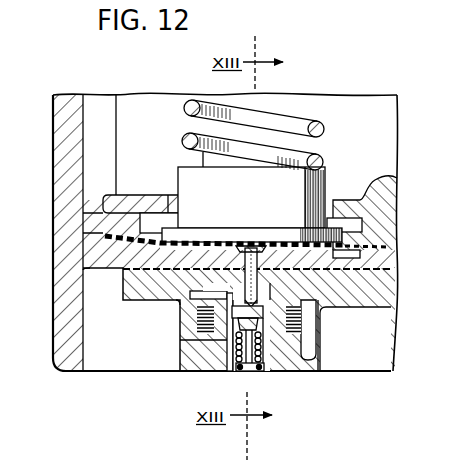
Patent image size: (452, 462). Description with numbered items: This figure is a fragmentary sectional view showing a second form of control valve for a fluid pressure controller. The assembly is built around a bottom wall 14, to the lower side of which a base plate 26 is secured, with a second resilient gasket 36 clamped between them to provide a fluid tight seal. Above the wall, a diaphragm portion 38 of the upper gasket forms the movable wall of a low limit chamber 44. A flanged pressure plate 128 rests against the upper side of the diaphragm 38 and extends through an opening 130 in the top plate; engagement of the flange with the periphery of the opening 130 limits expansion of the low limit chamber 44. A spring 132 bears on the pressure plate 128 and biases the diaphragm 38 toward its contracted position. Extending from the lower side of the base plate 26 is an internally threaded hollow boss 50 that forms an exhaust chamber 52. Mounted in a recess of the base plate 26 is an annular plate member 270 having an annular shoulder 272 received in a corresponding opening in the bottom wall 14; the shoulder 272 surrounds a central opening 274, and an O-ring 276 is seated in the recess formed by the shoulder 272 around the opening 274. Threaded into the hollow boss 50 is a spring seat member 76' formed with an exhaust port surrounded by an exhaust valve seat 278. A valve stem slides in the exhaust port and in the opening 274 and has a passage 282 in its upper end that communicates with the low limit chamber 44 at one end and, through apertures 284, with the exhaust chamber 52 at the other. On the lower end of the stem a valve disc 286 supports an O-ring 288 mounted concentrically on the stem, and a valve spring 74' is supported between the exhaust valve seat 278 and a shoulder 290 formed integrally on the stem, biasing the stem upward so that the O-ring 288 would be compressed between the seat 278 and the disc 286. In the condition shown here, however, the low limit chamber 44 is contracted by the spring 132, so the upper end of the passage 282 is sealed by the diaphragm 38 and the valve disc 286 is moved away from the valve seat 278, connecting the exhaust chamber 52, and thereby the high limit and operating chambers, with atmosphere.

The bottom wall 14 is at (123, 272).
The base plate 26 is at (140, 285).
The second resilient gasket 36 is at (390, 271).
The diaphragm portion 38 is at (352, 211).
The low limit chamber 44 is at (387, 247).
The hollow boss 50 is at (314, 354).
The exhaust chamber 52 is at (182, 357).
The valve spring 74' is at (298, 350).
The spring seat member 76' is at (185, 343).
The flanged pressure plate 128 is at (331, 172).
The opening 130 is at (173, 196).
The spring 132 is at (321, 122).
The annular plate member 270 is at (345, 309).
The annular shoulder 272 is at (300, 232).
The opening 274 is at (319, 313).
The O-ring 276 is at (242, 246).
The exhaust valve seat 278 is at (267, 375).
The passage 282 is at (249, 245).
The apertures 284 is at (205, 302).
The valve disc 286 is at (254, 372).
The O-ring 288 is at (252, 377).
The shoulder 290 is at (205, 323).